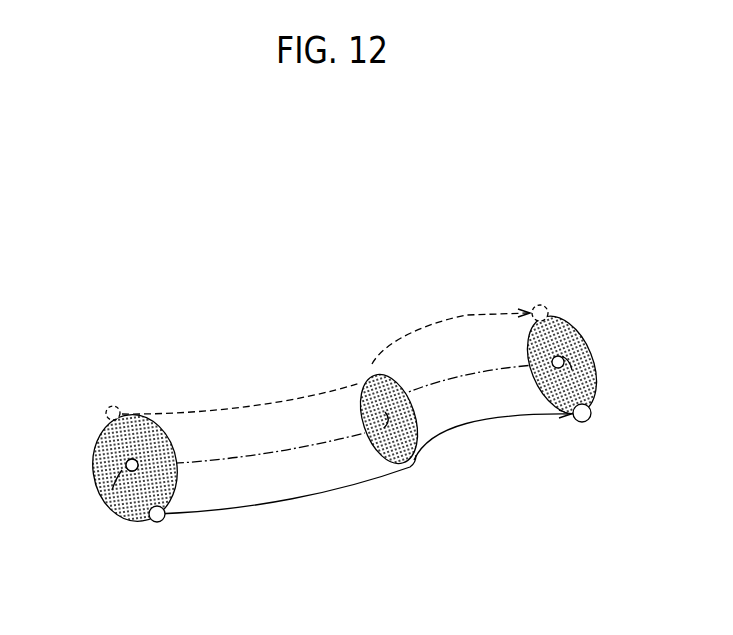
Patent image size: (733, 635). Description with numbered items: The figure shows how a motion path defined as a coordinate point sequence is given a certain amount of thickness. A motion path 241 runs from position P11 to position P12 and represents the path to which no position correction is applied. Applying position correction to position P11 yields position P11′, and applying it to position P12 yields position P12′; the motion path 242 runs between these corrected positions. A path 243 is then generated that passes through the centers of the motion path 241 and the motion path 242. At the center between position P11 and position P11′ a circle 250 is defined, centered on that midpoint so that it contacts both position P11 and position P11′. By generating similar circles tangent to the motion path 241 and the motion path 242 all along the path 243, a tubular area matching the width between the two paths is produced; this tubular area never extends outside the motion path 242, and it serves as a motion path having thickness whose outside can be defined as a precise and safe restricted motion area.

The motion path 241 is at (304, 505).
The motion path 242 is at (233, 407).
The path 243 is at (323, 443).
The circle 250 is at (122, 520).
The position P11 is at (162, 532).
The position P11′ is at (112, 397).
The position P12 is at (605, 424).
The position P12′ is at (561, 299).